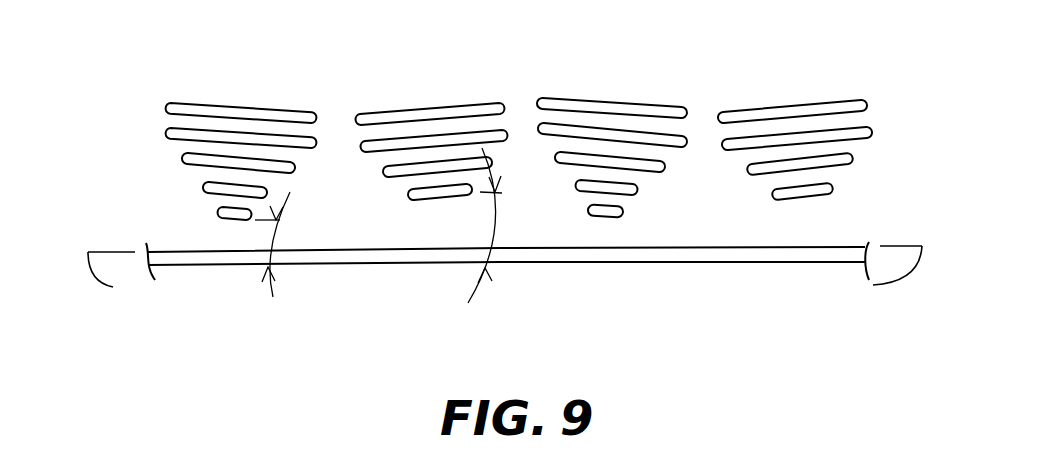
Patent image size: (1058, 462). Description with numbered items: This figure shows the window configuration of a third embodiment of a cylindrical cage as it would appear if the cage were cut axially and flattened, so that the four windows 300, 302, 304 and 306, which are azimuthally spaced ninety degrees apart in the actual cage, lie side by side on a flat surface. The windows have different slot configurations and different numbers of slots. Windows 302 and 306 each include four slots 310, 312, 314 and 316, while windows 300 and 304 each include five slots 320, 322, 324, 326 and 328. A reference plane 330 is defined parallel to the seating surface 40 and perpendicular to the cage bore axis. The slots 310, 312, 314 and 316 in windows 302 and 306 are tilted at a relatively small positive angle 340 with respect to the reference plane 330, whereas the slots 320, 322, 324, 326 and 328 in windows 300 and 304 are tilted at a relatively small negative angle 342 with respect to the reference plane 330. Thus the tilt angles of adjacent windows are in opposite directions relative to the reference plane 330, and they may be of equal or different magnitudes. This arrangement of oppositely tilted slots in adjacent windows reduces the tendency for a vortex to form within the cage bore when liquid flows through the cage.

The seating surface 40 is at (720, 263).
The window 300 is at (205, 100).
The window 302 is at (428, 102).
The window 304 is at (617, 100).
The window 306 is at (768, 105).
The slot 310 is at (403, 112).
The slot 312 is at (388, 157).
The slot 314 is at (397, 180).
The slot 316 is at (433, 200).
The slot 320 is at (165, 103).
The slot 322 is at (165, 130).
The slot 324 is at (182, 158).
The slot 326 is at (205, 189).
The slot 328 is at (217, 213).
The reference plane 330 is at (505, 277).
The positive angle 340 is at (488, 218).
The negative angle 342 is at (263, 235).